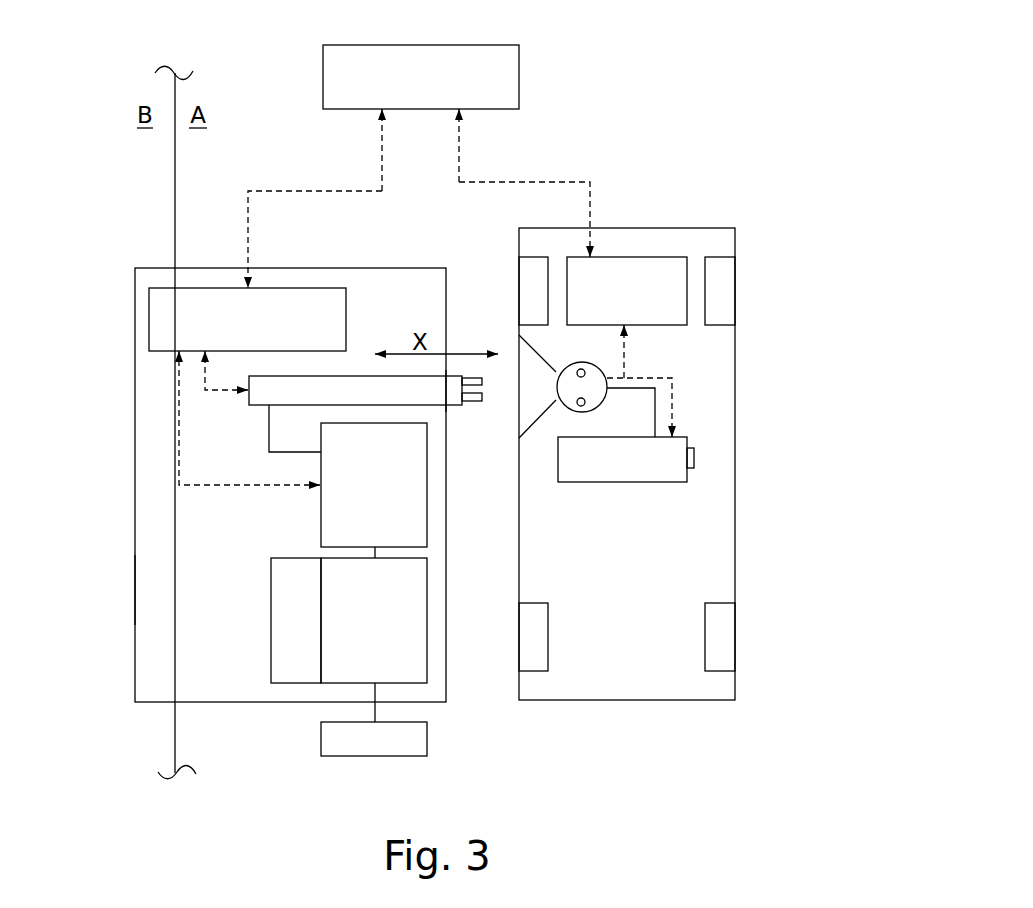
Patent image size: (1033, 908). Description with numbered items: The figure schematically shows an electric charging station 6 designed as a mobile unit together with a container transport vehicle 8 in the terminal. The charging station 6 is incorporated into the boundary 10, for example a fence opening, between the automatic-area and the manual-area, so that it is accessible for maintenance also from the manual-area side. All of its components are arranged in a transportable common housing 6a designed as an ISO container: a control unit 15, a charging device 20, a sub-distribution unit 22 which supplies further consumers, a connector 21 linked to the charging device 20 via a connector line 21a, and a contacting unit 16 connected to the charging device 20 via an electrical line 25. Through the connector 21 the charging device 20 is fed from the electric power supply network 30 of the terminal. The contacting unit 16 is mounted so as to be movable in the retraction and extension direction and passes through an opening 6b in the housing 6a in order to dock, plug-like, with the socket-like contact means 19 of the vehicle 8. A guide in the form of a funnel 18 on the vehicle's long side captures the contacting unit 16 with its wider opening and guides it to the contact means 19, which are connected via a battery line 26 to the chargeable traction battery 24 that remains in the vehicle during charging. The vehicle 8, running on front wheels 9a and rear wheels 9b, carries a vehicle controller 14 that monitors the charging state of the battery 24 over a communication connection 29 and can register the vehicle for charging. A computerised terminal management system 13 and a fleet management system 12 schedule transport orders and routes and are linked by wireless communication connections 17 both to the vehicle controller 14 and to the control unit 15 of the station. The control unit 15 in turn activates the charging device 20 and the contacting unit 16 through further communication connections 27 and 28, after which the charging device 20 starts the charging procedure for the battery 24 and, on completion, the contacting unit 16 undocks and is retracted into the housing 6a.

The electric charging station 6 is at (122, 640).
The housing 6a is at (130, 587).
The opening 6b is at (450, 408).
The container transport vehicle 8 is at (757, 475).
The front wheels 9a is at (533, 660).
The rear wheels 9b is at (532, 270).
The boundary 10 is at (168, 177).
The fleet management system 12 is at (486, 69).
The terminal management system 13 is at (512, 80).
The vehicle controller 14 is at (645, 278).
The control unit 15 is at (163, 323).
The contacting unit 16 is at (349, 385).
The wireless communication connection 17 is at (295, 180).
The funnel 18 is at (535, 365).
The contact means 19 is at (597, 373).
The charging device 20 is at (340, 522).
The connector 21 is at (410, 668).
The connector line 21a is at (372, 709).
The sub-distribution unit 22 is at (290, 657).
The battery 24 is at (663, 468).
The electrical line 25 is at (268, 424).
The battery line 26 is at (663, 392).
The communication connection 27 is at (175, 374).
The communication connection 28 is at (222, 396).
The communication connection 29 is at (678, 405).
The electric power supply network 30 is at (385, 735).